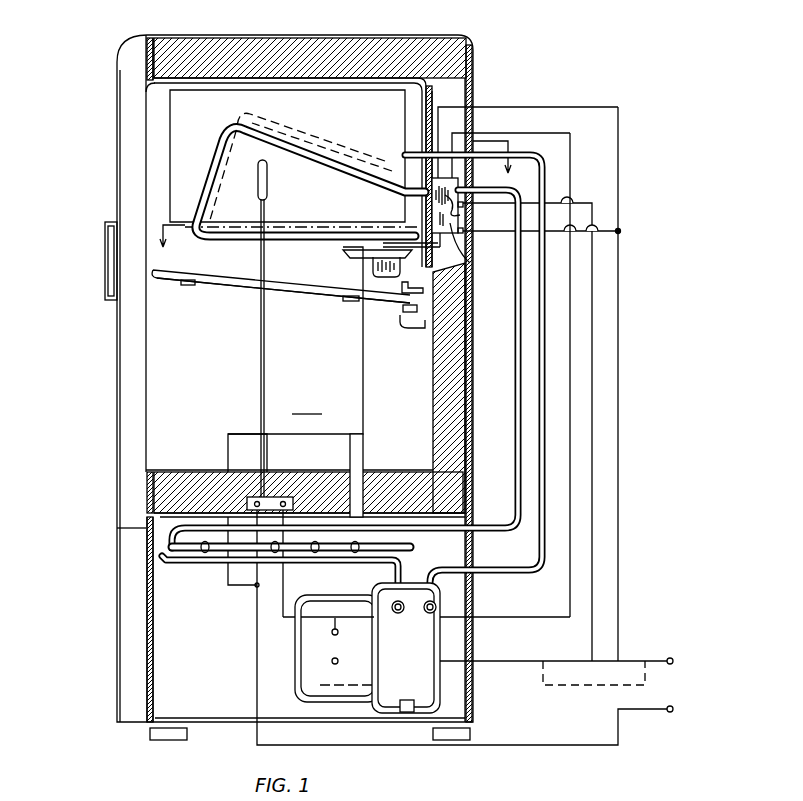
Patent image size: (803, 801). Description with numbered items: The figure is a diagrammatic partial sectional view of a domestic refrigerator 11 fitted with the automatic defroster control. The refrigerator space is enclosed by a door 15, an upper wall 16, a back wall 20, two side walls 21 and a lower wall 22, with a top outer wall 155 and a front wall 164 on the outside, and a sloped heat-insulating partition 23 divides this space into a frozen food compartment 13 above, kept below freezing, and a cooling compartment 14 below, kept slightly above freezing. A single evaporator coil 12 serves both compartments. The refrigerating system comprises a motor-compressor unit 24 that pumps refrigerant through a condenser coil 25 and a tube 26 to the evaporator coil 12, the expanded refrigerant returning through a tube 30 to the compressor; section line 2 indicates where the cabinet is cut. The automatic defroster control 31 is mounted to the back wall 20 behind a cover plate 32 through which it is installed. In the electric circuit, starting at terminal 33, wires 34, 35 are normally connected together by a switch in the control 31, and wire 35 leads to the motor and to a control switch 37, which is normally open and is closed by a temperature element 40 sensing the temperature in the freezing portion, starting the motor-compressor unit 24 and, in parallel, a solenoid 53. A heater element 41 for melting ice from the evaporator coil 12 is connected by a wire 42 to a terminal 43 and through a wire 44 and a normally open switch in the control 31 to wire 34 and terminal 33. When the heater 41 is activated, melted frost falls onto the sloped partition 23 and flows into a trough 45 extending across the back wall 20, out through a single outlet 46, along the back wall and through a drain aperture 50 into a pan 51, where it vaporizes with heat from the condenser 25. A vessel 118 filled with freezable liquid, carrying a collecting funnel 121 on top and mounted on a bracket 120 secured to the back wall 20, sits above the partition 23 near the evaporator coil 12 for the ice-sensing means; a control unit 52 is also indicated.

The refrigerator 11 is at (108, 132).
The evaporator coil 12 is at (197, 245).
The frozen food compartment 13 is at (170, 155).
The cooling compartment 14 is at (157, 343).
The door 15 is at (127, 456).
The upper wall 16 is at (147, 88).
The front wall 164 is at (168, 42).
The top outer wall 155 is at (328, 33).
The section line 2- 2 is at (335, 206).
The back wall 20 is at (432, 438).
The side walls 21 is at (307, 403).
The lower wall 22 is at (197, 470).
The heat-insulating partition 23 is at (327, 295).
The motor-compressor unit 24 is at (305, 660).
The condenser coil 25 is at (418, 553).
The tube 26 is at (518, 373).
The tube 30 is at (540, 455).
The automatic defroster control 31 is at (455, 262).
The cover plate 32 is at (440, 243).
The terminal 33 is at (668, 659).
The wire 34 is at (620, 229).
The wire 35 is at (567, 197).
The control switch 37 is at (258, 470).
The temperature element 40 is at (270, 180).
The heater element 41 is at (318, 246).
The wire 42 is at (365, 375).
The terminal 43 is at (585, 745).
The wire 44 is at (463, 207).
The trough 45 is at (405, 322).
The outlet 46 is at (410, 335).
The drain aperture 50 is at (357, 466).
The pan 51 is at (215, 566).
The control unit 52 is at (600, 688).
The solenoid 53 is at (432, 185).
The vessel 118 is at (400, 262).
The bracket 120 is at (400, 300).
The collecting funnel 121 is at (357, 250).